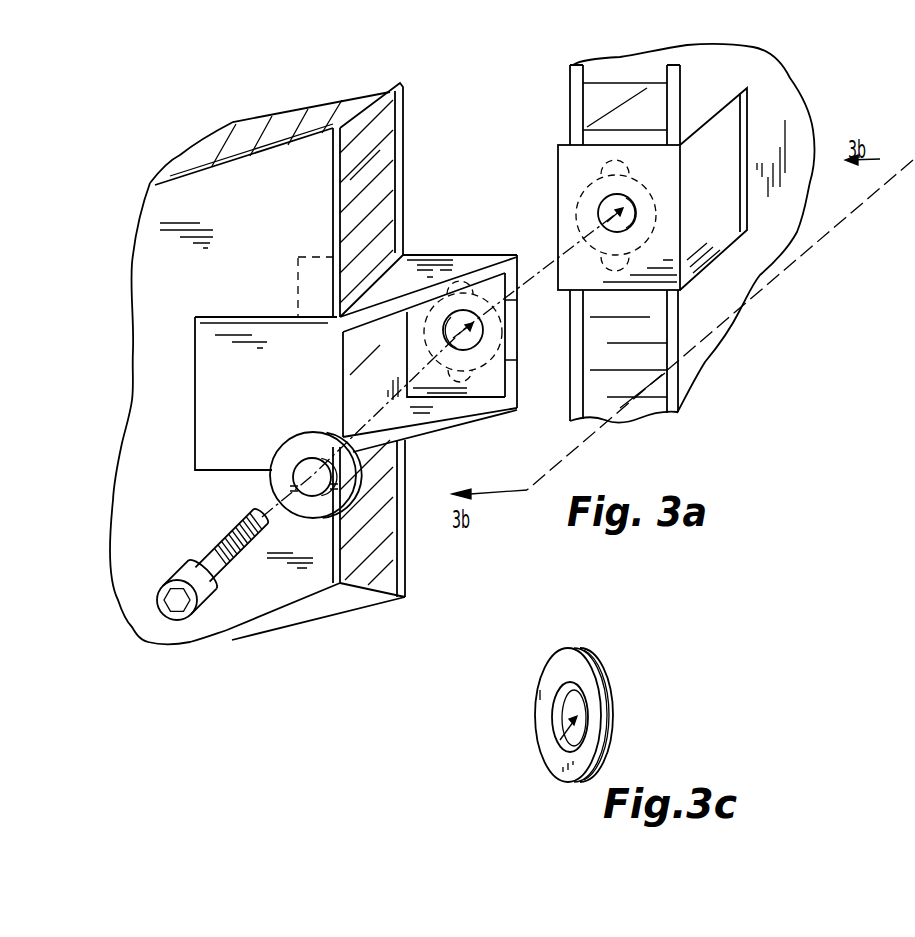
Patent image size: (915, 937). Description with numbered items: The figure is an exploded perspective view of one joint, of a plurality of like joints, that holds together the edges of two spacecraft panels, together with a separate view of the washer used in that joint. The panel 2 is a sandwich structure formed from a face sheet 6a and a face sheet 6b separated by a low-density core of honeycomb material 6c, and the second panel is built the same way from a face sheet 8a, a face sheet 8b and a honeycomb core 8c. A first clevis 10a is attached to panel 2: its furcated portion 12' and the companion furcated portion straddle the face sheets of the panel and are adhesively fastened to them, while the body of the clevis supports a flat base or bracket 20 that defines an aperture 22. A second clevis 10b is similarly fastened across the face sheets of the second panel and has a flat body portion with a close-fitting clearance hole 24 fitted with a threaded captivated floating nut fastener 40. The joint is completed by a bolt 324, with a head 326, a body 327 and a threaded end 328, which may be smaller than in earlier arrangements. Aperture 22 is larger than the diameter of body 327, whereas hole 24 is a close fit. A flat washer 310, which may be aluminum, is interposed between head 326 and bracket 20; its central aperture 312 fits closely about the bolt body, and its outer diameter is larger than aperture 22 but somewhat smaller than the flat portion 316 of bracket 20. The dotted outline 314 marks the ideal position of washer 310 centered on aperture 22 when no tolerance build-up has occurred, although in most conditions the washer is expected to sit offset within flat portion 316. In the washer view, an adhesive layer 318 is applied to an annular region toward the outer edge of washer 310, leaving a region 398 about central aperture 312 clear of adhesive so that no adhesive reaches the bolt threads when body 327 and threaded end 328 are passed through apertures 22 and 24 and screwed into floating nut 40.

In FIG. 3A, the panel 2 is at (143, 507).
In FIG. 3A, the face sheet 6a is at (333, 130).
In FIG. 3A, the face sheet 6b is at (398, 118).
In FIG. 3A, the low-density core of honeycomb material 6c is at (380, 168).
In FIG. 3A, the face sheet 8a is at (572, 93).
In FIG. 3A, the face sheet 8b is at (722, 298).
In FIG. 3A, the honeycomb core 8c is at (642, 410).
In FIG. 3A, the first clevis 10a is at (433, 267).
In FIG. 3A, the second clevis 10b is at (727, 130).
In FIG. 3A, the furcated portion 12' is at (209, 393).
In FIG. 3A, the flat base or bracket 20 is at (500, 290).
In FIG. 3A, the aperture 22 is at (435, 335).
In FIG. 3A, the clearance hole 24 is at (605, 208).
In FIG. 3A, the floating nut fastener 40 is at (782, 212).
In FIG. 3A, the flat washer 310 is at (293, 445).
In FIG. 3C, the flat washer 310 is at (607, 682).
In FIG. 3A, the central aperture 312 is at (296, 470).
In FIG. 3C, the central aperture 312 is at (567, 727).
In FIG. 3A, the dotted outline 314 is at (503, 376).
In FIG. 3A, the flat portion 316 is at (490, 392).
In FIG. 3C, the adhesive layer 318 is at (553, 677).
In FIG. 3A, the bolt 324 is at (164, 582).
In FIG. 3A, the head 326 is at (203, 610).
In FIG. 3A, the body 327 is at (213, 547).
In FIG. 3A, the threaded end 328 is at (243, 522).
In FIG. 3C, the region clear of adhesive 398 is at (568, 682).